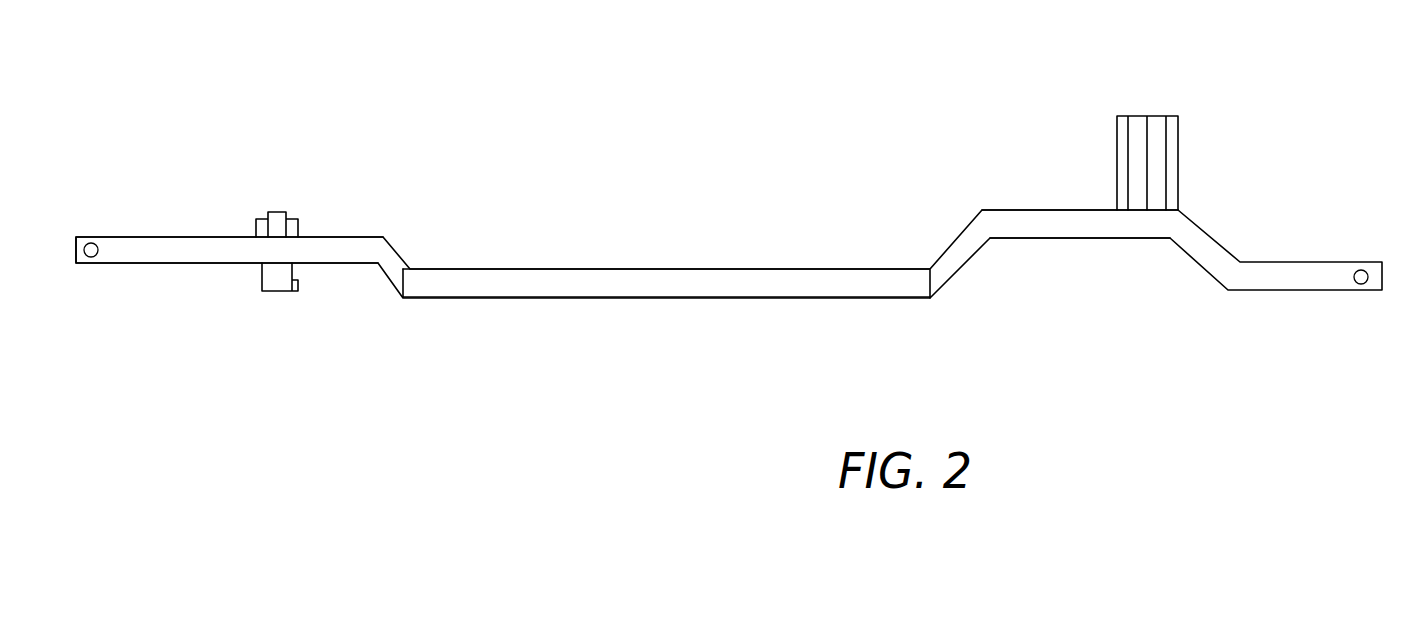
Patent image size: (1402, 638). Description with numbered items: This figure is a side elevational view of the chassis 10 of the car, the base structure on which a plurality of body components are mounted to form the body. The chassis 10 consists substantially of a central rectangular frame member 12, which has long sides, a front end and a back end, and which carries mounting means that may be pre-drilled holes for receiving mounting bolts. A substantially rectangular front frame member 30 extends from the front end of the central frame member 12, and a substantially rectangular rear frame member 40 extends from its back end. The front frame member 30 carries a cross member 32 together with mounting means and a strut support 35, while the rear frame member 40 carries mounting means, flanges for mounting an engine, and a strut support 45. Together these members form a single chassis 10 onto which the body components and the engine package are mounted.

The chassis 10 is at (702, 178).
The central rectangular frame member 12 is at (705, 298).
The front frame member 30 is at (170, 237).
The cross member 32 is at (280, 293).
The strut support 35 is at (277, 212).
The rear frame member 40 is at (1075, 223).
The strut support 45 is at (1150, 115).